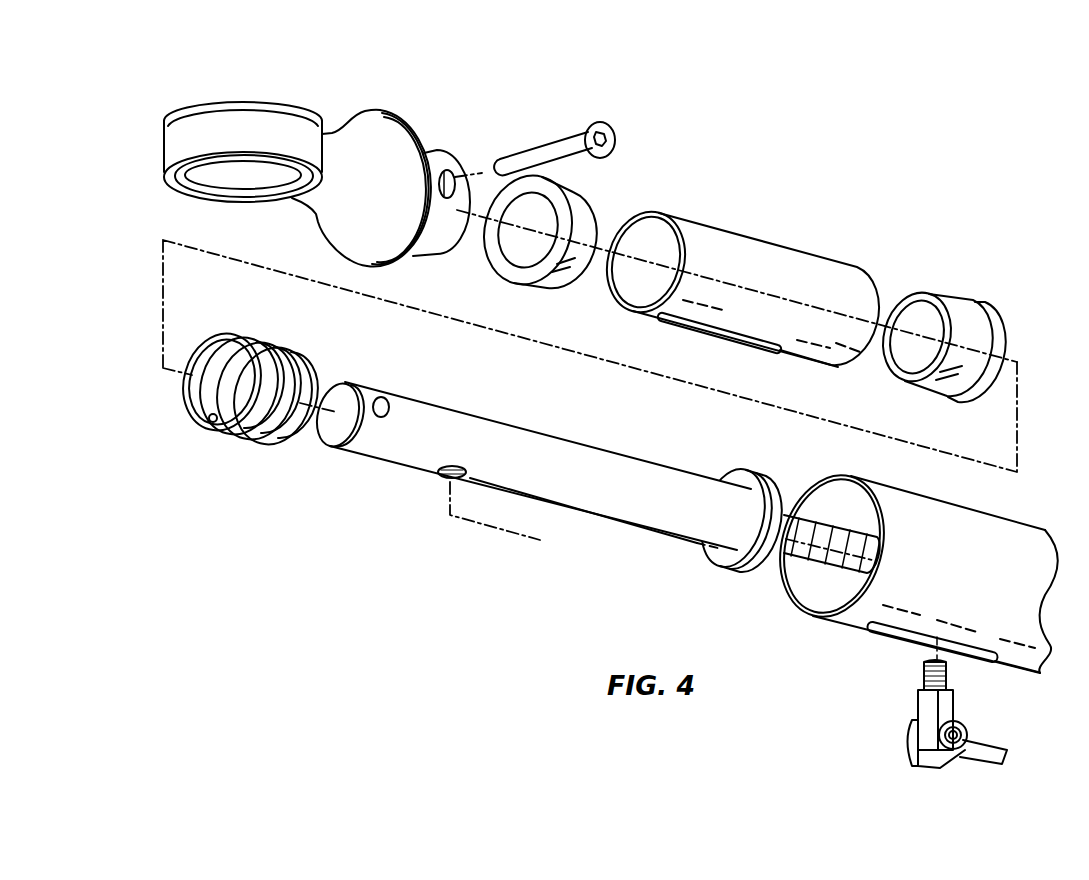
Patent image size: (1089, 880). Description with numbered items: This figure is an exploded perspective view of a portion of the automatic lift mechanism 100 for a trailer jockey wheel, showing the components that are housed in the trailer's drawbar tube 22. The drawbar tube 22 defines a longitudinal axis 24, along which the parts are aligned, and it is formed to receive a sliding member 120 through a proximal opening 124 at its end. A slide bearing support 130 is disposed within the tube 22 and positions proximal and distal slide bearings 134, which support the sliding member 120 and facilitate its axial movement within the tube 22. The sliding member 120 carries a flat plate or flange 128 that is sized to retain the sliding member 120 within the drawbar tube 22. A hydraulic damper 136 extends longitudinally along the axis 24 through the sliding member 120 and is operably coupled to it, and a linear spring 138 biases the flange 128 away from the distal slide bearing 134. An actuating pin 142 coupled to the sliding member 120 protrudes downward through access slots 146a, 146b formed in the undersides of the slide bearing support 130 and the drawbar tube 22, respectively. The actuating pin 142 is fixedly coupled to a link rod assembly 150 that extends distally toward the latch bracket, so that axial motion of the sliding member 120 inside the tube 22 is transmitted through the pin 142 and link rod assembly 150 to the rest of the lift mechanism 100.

The automatic lift mechanism 100 is at (976, 70).
The drawbar tube 22 is at (980, 533).
The longitudinal axis 24 is at (1017, 402).
The sliding member 120 is at (513, 447).
The proximal opening 124 is at (832, 493).
The flange 128 is at (743, 480).
The slide bearing support 130 is at (772, 266).
The slide bearings 134 is at (583, 210).
The hydraulic damper 136 is at (784, 550).
The linear spring 138 is at (271, 435).
The actuating pin 142 is at (922, 702).
The access slot 146a is at (722, 333).
The access slot 146b is at (970, 657).
The link rod assembly 150 is at (978, 760).